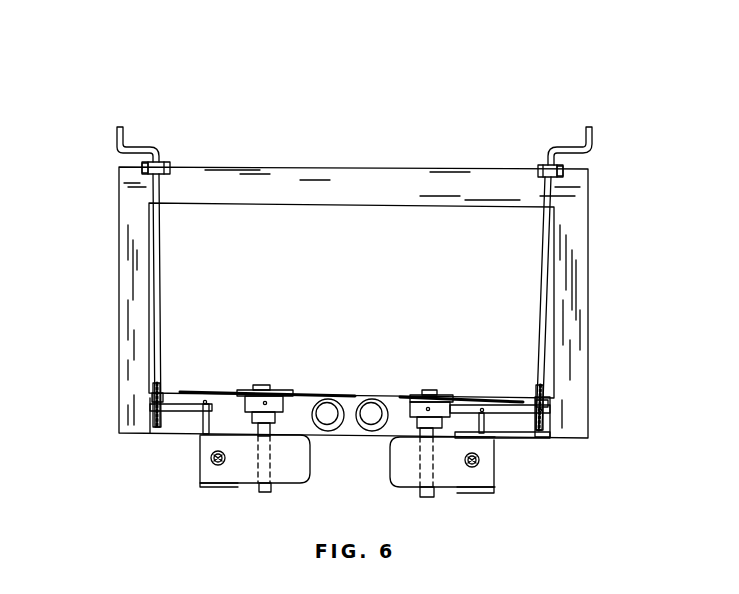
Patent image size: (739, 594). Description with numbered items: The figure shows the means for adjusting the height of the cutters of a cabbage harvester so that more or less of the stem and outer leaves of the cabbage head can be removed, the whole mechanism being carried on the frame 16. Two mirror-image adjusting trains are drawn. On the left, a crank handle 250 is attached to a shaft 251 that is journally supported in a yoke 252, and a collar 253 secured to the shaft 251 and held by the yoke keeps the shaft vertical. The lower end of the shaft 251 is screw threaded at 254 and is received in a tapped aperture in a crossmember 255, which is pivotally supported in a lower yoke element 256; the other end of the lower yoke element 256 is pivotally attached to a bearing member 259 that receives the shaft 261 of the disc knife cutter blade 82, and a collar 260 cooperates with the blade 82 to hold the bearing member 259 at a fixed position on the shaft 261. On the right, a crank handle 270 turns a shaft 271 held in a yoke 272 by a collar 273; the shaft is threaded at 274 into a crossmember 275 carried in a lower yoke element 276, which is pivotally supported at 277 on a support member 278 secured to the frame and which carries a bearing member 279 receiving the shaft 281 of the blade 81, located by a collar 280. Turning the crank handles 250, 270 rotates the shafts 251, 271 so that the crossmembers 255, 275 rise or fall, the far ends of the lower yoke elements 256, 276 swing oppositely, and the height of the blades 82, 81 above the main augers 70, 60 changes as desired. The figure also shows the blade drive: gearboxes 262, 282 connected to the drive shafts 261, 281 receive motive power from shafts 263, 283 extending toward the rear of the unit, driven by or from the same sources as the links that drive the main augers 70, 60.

The frame 16 is at (578, 260).
The crank handle 250 is at (132, 145).
The shaft 251 is at (161, 257).
The yoke 252 is at (163, 162).
The collar 253 is at (142, 165).
The screw thread 254 is at (157, 388).
The crossmember 255 is at (153, 402).
The lower yoke element 256 is at (170, 397).
The right cutter blade 82 is at (187, 392).
The left cutter blade 81 is at (468, 398).
The bearing member 259 is at (280, 397).
The collar 260 is at (273, 413).
The shaft 261 is at (263, 492).
The gearbox 262 is at (290, 484).
The shaft 263 is at (218, 466).
The main auger 70 is at (318, 400).
The main auger 60 is at (378, 402).
The crank handle 270 is at (568, 145).
The shaft 271 is at (545, 268).
The yoke 272 is at (542, 166).
The collar 273 is at (561, 166).
The screw thread 274 is at (550, 400).
The crossmember 275 is at (552, 410).
The lower yoke element 276 is at (523, 408).
The pivot 277 is at (172, 430).
The support member 278 is at (200, 418).
The bearing member 279 is at (410, 397).
The collar 280 is at (415, 420).
The shaft 281 is at (427, 497).
The gearbox 282 is at (410, 488).
The shaft 283 is at (472, 467).